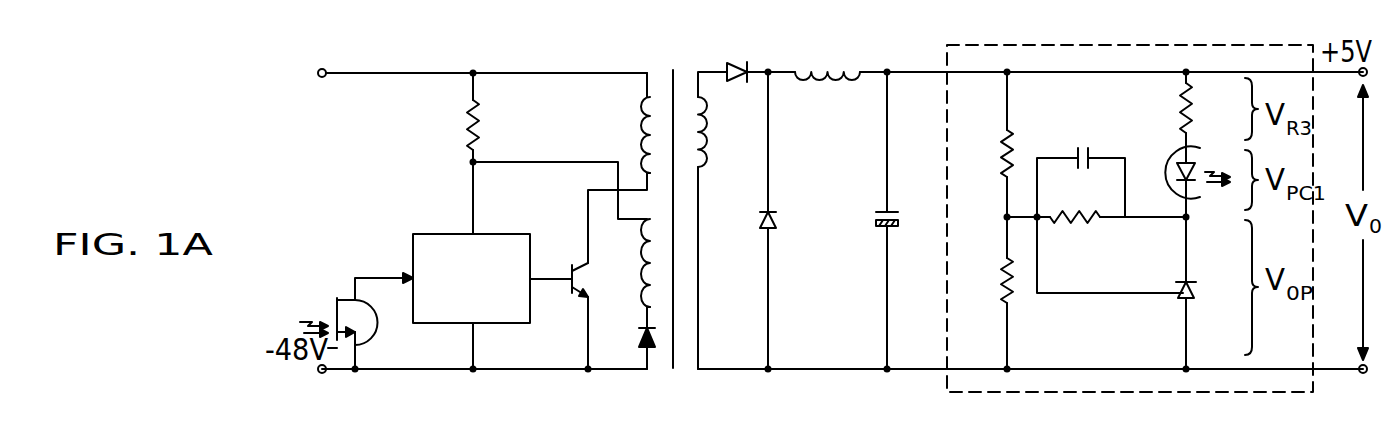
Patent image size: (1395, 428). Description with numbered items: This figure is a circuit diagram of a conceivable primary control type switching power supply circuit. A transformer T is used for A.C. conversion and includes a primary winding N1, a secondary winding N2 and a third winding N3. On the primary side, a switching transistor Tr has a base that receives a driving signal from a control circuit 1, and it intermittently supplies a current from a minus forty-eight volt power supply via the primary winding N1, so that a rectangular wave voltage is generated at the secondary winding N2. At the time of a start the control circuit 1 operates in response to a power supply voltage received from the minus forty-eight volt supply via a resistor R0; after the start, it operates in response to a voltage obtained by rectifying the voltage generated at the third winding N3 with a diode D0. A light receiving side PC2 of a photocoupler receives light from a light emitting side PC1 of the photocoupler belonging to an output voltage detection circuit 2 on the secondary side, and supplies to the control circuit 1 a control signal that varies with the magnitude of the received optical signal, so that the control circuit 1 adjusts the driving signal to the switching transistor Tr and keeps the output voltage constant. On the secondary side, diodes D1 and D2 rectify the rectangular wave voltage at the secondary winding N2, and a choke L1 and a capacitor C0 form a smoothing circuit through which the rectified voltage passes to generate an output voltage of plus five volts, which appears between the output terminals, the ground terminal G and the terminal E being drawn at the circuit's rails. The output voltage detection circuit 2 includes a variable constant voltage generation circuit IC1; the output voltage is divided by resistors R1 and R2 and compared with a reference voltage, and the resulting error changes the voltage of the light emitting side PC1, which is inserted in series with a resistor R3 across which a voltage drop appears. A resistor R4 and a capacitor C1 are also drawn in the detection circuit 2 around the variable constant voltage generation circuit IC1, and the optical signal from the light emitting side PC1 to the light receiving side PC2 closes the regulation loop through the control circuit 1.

The control circuit 1 is at (432, 234).
The output voltage detection circuit 2 is at (947, 375).
The ground terminal G is at (465, 75).
The resistor R0 is at (492, 117).
The primary winding N1 is at (617, 168).
The third winding N3 is at (622, 263).
The switching transistor Tr is at (559, 301).
The diode D0 is at (625, 338).
The light receiving side of photocoupler PC2 is at (366, 325).
The transformer T is at (672, 201).
The secondary winding N2 is at (730, 220).
The diode D1 is at (761, 58).
The choke L1 is at (1079, 57).
The diode D2 is at (743, 220).
The capacitor C0 is at (859, 220).
The resistor R1 is at (981, 144).
The resistor R2 is at (981, 293).
The resistor R3 is at (1206, 117).
The resistor R4 is at (1118, 200).
The capacitor C1 is at (1081, 167).
The light emitting side of photocoupler PC1 is at (1202, 188).
The variable constant voltage generation circuit IC1 is at (1206, 293).
The output terminal E is at (1366, 389).